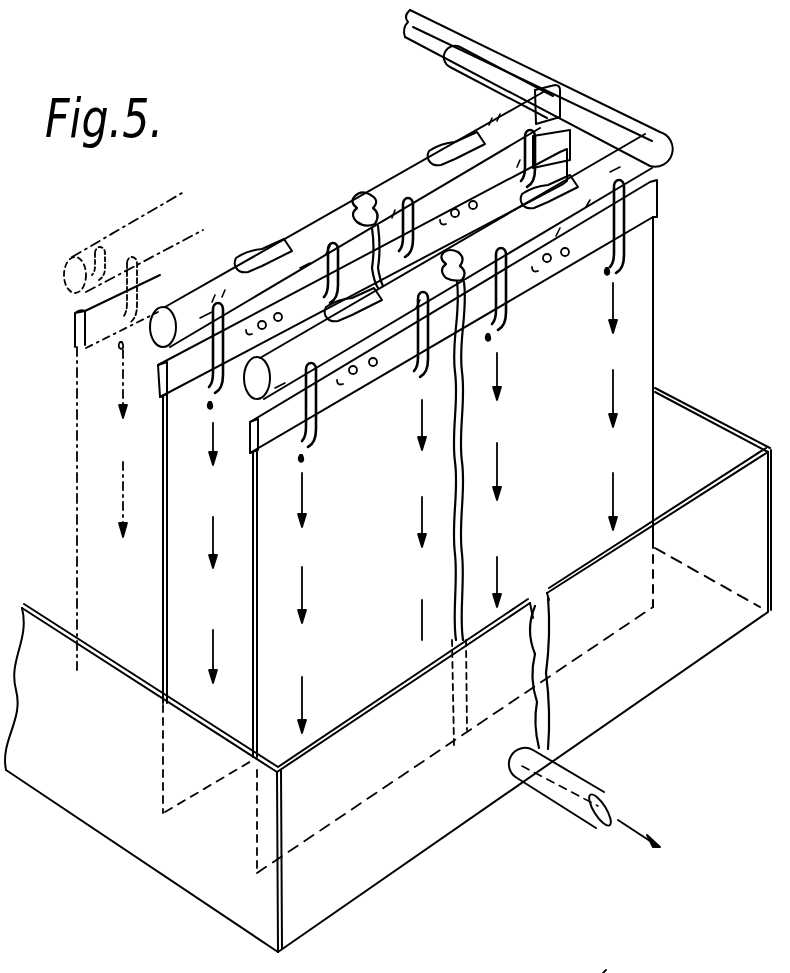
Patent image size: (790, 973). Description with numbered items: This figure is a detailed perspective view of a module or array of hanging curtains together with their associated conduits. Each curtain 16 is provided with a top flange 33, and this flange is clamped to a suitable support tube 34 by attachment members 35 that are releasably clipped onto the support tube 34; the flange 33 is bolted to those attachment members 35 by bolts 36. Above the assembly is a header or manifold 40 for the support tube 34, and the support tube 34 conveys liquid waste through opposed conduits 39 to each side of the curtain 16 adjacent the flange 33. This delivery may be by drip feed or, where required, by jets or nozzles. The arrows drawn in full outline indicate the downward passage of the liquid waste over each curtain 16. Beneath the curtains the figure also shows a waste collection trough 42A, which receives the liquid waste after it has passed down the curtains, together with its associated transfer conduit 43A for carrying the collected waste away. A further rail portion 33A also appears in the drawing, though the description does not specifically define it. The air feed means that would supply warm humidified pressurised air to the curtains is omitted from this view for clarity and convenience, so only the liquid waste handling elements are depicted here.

The curtain 16 is at (655, 345).
The top flange 33 is at (658, 198).
The curtain rail 33A is at (635, 961).
The support tube 34 is at (614, 147).
The attachment member 35 is at (262, 246).
The bolt 36 is at (566, 260).
The opposed conduit 39 is at (312, 432).
The header or manifold 40 is at (503, 70).
The waste collection trough 42A is at (660, 650).
The transfer conduit 43A is at (552, 790).